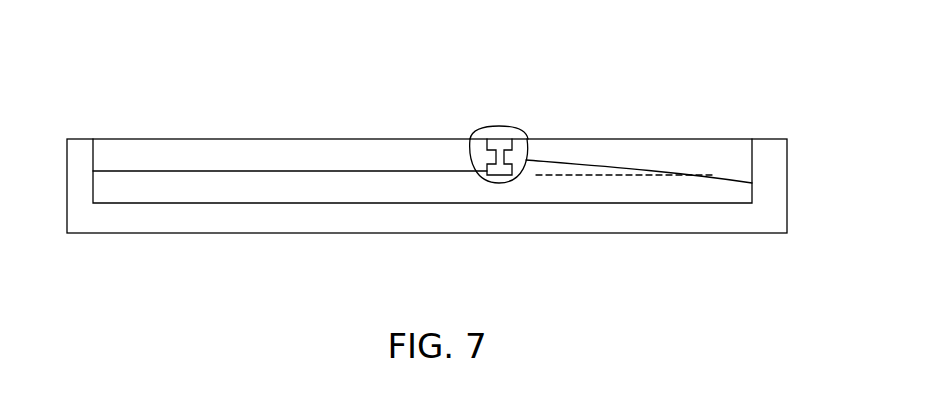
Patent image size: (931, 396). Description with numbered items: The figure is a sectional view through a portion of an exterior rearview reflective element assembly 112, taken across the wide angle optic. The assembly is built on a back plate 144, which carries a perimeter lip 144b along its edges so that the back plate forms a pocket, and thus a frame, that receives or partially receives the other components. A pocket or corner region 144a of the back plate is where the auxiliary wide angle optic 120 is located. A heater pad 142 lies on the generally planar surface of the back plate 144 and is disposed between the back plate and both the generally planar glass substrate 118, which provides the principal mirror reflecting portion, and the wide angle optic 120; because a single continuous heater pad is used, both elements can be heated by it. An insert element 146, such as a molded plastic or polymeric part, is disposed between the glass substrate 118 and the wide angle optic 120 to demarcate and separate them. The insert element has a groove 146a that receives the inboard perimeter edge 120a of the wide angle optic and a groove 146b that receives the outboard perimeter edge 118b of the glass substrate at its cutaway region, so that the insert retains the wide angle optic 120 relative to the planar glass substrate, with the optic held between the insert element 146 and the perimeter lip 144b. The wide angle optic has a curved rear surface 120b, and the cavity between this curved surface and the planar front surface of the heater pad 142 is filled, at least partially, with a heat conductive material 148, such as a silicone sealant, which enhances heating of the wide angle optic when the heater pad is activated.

The exterior rearview reflective element assembly 112 is at (252, 97).
The glass substrate 118 is at (342, 150).
The perimeter edge of the glass substrate 118b is at (474, 163).
The wide angle optic 120 is at (628, 169).
The inboard perimeter edge of the wide angle optic 120a is at (520, 159).
The curved rear surface of the wide angle optic 120b is at (639, 176).
The heater pad 142 is at (203, 188).
The back plate 144 is at (299, 244).
The pocket of the back plate 144a is at (707, 218).
The perimeter lip of the back plate 144b is at (767, 163).
The insert element 146 is at (502, 112).
The groove of the insert element 146a is at (528, 138).
The groove of the insert element 146b is at (471, 138).
The heat conductive material 148 is at (577, 162).